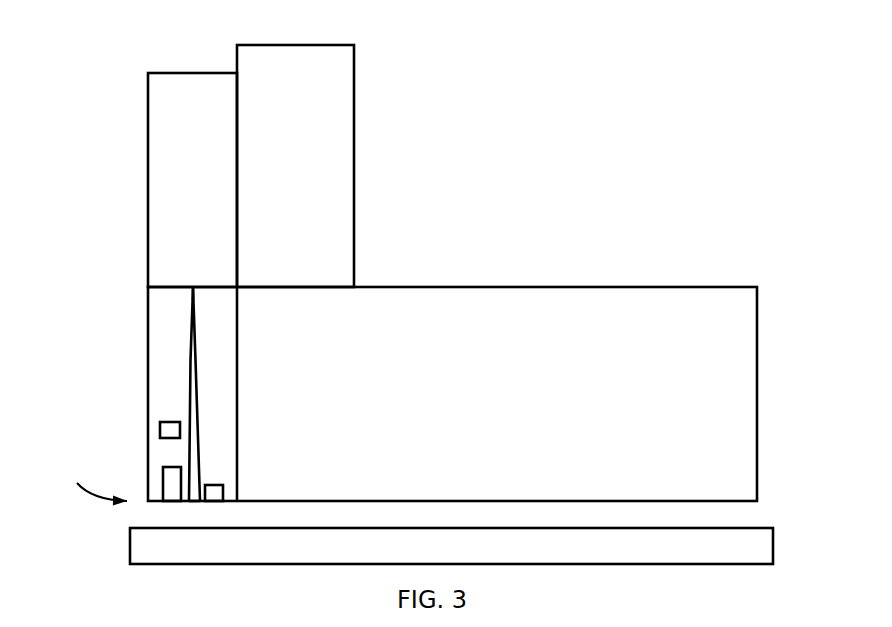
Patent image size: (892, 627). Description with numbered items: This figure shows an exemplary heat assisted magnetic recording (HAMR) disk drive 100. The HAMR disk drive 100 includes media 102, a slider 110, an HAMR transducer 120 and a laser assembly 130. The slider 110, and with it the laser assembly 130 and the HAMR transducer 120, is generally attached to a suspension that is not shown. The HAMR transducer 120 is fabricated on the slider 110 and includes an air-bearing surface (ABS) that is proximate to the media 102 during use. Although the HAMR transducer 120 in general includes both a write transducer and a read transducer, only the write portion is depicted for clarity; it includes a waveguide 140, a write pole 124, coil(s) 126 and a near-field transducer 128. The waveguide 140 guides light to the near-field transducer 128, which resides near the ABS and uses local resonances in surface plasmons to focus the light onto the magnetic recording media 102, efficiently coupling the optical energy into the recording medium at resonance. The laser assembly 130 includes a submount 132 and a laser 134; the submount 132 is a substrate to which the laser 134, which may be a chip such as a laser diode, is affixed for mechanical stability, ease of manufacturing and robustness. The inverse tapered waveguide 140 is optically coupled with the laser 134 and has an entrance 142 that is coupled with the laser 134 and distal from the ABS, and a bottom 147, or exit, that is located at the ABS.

The HAMR disk drive 100 is at (459, 23).
The media 102 is at (130, 543).
The slider 110 is at (757, 358).
The HAMR transducer 120 is at (240, 313).
The write pole 124 is at (163, 467).
The coil(s) 126 is at (160, 422).
The near-field transducer 128 is at (223, 490).
The laser assembly 130 is at (88, 190).
The submount 132 is at (355, 147).
The laser 134 is at (148, 88).
The inverse tapered waveguide 140 is at (188, 388).
The entrance 142 is at (183, 297).
The bottom 147 is at (193, 504).